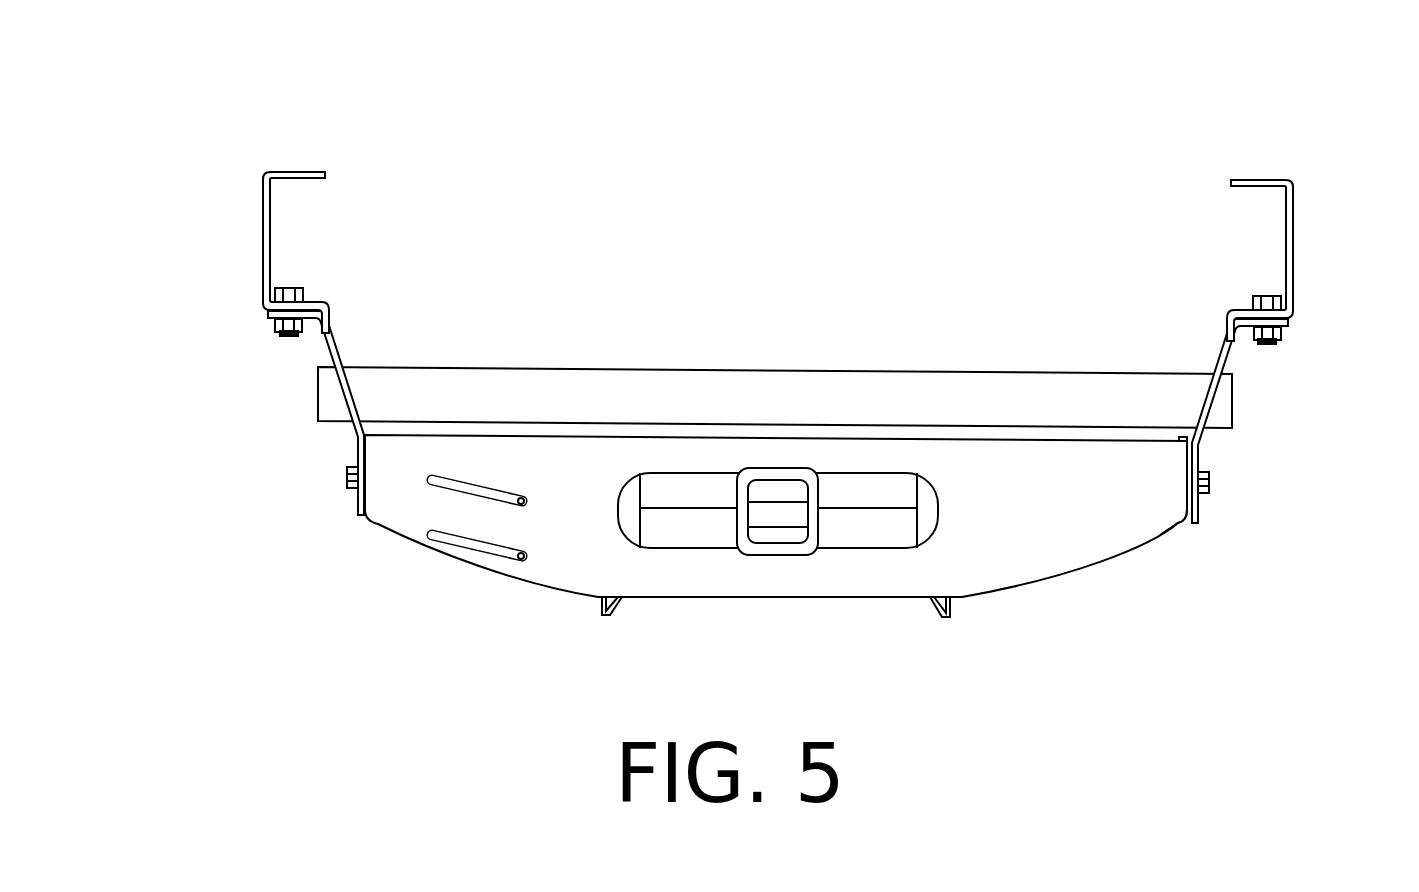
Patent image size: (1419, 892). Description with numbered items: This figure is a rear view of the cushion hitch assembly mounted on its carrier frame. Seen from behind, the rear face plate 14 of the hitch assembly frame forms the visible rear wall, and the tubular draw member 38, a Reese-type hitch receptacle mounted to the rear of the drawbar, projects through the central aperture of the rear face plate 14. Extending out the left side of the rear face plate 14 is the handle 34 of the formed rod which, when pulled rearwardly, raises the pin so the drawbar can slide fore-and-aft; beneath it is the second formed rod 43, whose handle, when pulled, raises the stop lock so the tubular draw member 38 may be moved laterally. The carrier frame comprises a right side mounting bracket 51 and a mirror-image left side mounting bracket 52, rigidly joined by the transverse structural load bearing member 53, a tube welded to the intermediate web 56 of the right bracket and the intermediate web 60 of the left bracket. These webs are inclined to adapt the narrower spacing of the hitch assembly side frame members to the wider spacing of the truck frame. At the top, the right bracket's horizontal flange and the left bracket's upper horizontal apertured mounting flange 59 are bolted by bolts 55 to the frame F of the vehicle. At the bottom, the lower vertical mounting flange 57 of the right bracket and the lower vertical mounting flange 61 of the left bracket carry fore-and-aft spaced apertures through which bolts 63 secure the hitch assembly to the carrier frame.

The rear face plate 14 is at (1080, 518).
The handle 34 is at (422, 486).
The tubular draw member 38 is at (781, 468).
The second formed rod 43 is at (432, 547).
The right side mounting bracket 51 is at (1218, 357).
The left side mounting bracket 52 is at (332, 352).
The transverse structural load bearing member 53 is at (854, 395).
The bolts 55 is at (1257, 343).
The intermediate web 56 is at (1228, 413).
The lower vertical mounting flange 57 is at (1190, 517).
The upper horizontal apertured mounting flange 59 is at (263, 318).
The intermediate web 60 is at (316, 396).
The lower vertical mounting flange 61 is at (355, 500).
The bolts 63 is at (1203, 488).
The frame of the vehicle F is at (310, 170).